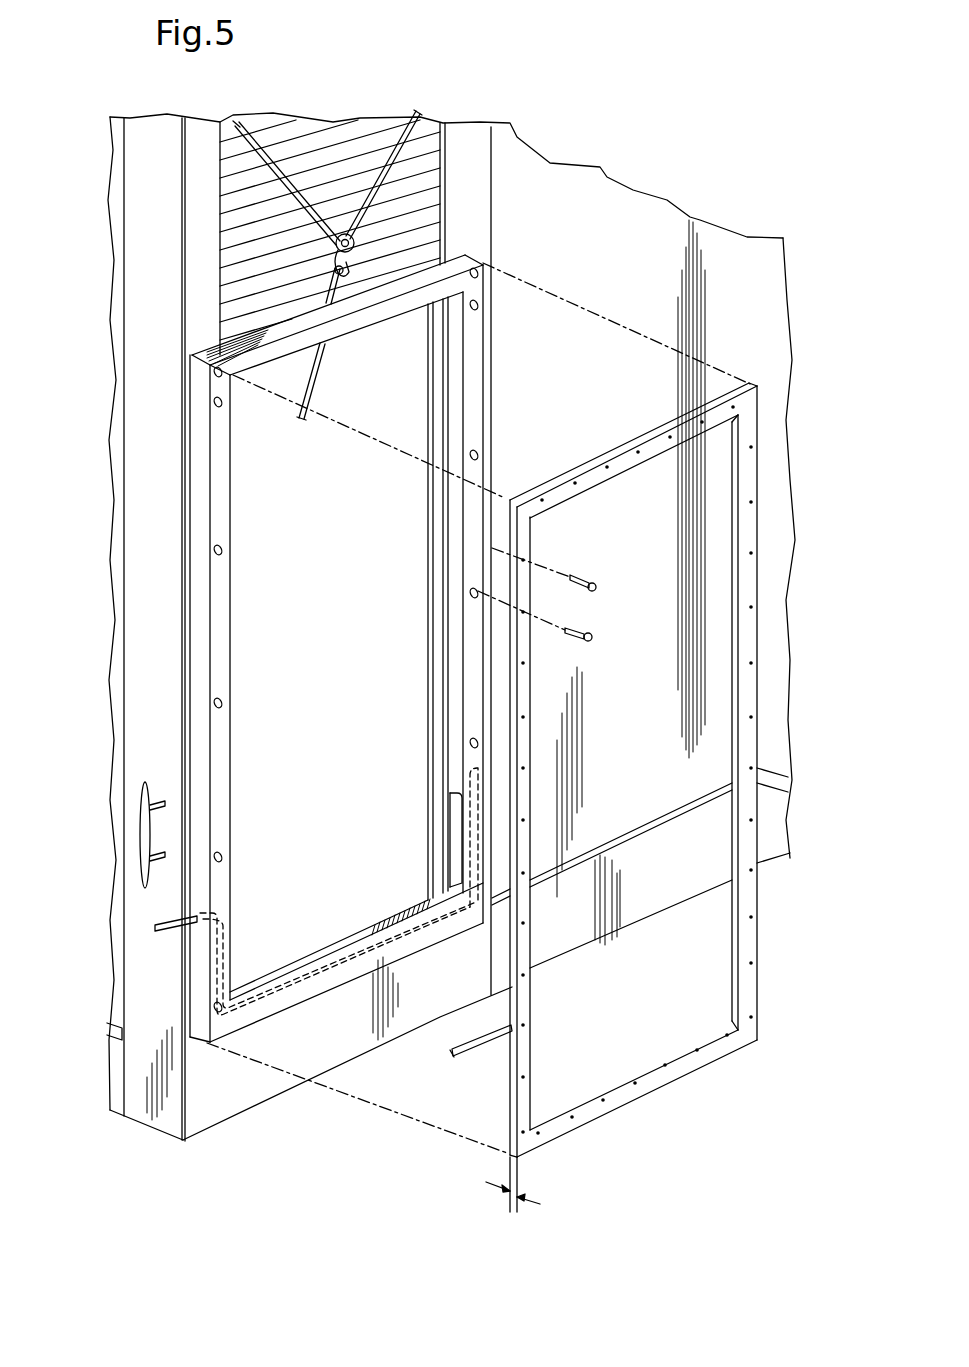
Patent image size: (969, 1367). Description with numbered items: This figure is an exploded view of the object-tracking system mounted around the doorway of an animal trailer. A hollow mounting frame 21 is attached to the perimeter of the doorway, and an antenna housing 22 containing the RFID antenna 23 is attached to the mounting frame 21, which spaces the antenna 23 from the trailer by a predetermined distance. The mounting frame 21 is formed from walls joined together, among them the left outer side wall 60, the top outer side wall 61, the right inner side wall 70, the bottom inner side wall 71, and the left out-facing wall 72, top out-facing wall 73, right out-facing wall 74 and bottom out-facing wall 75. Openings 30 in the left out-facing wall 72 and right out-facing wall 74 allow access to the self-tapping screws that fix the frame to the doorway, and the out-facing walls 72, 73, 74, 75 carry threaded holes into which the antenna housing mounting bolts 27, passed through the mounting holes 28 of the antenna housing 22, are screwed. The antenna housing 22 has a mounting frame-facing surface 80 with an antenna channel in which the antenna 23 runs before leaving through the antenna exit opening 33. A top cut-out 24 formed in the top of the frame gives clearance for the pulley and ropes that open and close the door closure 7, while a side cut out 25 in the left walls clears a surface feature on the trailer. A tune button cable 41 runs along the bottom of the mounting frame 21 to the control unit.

The door closure 7 is at (340, 143).
The mounting frame 21 is at (484, 250).
The antenna housing 22 is at (757, 410).
The RFID antenna 23 is at (467, 1053).
The top cut-out 24 is at (392, 286).
The side cut out 25 is at (452, 820).
The antenna housing mounting bolts 27 is at (580, 576).
The mounting holes 28 is at (752, 607).
The openings 30 is at (480, 305).
The antenna exit opening 33 is at (200, 930).
The tune button cable 41 is at (153, 928).
The left outer side wall 60 is at (198, 383).
The top outer side wall 61 is at (208, 352).
The right inner side wall 70 is at (478, 438).
The bottom inner side wall 71 is at (247, 1000).
The left out-facing wall 72 is at (220, 462).
The top out-facing wall 73 is at (267, 347).
The right out-facing wall 74 is at (478, 388).
The bottom out-facing wall 75 is at (282, 1007).
The mounting frame-facing surface 80 is at (752, 477).